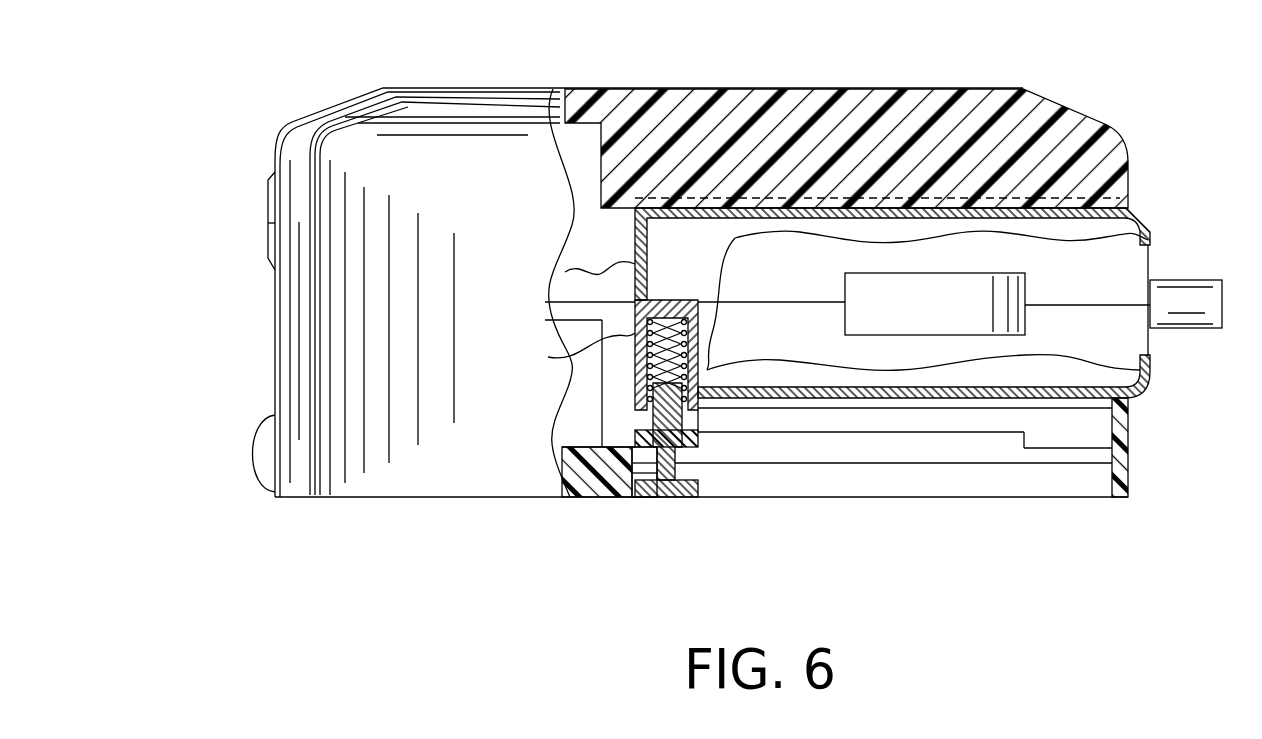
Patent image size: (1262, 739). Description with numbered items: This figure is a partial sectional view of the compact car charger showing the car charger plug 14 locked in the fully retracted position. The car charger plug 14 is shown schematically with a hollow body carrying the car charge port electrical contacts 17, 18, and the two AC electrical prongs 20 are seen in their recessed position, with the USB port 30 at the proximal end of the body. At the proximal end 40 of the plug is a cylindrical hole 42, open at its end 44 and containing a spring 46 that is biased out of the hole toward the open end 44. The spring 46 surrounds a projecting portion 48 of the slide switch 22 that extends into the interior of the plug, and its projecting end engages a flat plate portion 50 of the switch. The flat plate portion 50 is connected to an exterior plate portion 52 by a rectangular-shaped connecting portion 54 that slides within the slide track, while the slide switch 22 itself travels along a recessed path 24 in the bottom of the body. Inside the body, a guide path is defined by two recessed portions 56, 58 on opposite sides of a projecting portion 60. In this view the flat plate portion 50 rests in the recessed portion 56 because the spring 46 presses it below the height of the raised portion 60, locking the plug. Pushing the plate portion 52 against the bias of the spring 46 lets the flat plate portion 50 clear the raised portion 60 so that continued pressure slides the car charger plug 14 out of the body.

The car charger plug 14 is at (1123, 372).
The car charge port electrical contact 17 is at (963, 312).
The car charge port electrical contact 18 is at (1192, 293).
The AC electrical prongs 20 is at (265, 450).
The slide switch 22 is at (658, 508).
The recessed path 24 is at (1077, 487).
The USB port 30 is at (272, 240).
The proximal end of the plug 40 is at (568, 272).
The cylindrical hole 42 is at (548, 356).
The open end 44 is at (712, 423).
The spring 46 is at (683, 300).
The projecting portion of slide switch 48 is at (722, 368).
The flat plate portion 50 is at (700, 462).
The plate portion 52 is at (680, 500).
The rectangular-shaped connecting portion 54 is at (685, 473).
The recessed portion 56 is at (622, 431).
The recessed portion 58 is at (1095, 436).
The projecting portion 60 is at (895, 422).